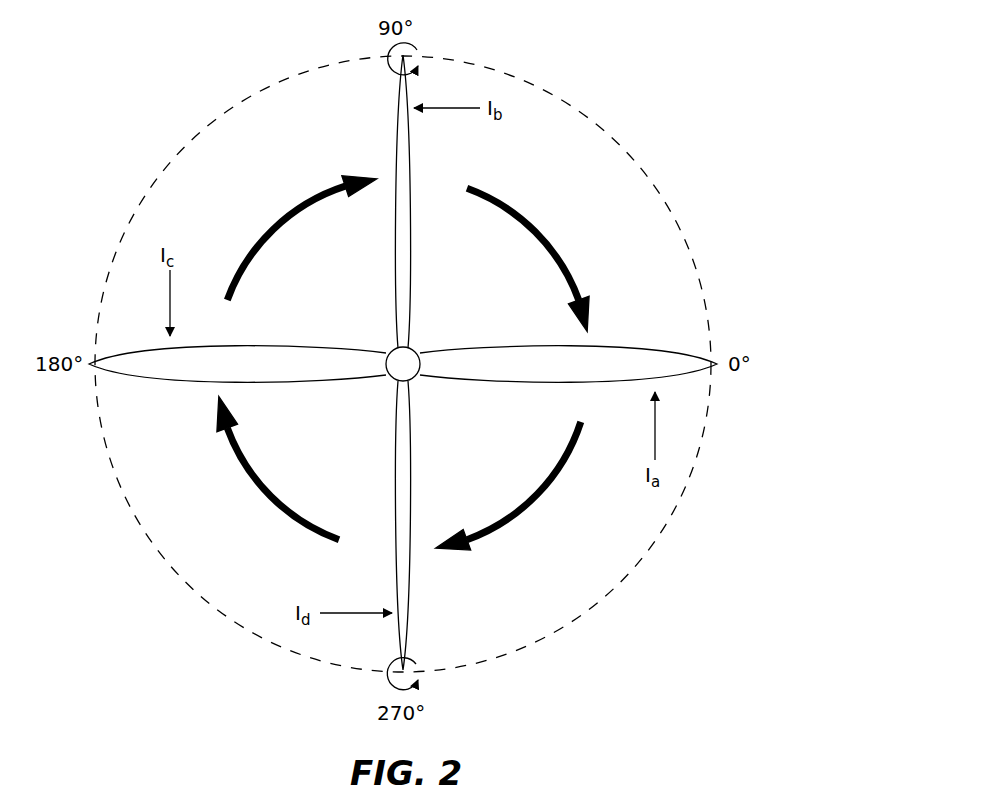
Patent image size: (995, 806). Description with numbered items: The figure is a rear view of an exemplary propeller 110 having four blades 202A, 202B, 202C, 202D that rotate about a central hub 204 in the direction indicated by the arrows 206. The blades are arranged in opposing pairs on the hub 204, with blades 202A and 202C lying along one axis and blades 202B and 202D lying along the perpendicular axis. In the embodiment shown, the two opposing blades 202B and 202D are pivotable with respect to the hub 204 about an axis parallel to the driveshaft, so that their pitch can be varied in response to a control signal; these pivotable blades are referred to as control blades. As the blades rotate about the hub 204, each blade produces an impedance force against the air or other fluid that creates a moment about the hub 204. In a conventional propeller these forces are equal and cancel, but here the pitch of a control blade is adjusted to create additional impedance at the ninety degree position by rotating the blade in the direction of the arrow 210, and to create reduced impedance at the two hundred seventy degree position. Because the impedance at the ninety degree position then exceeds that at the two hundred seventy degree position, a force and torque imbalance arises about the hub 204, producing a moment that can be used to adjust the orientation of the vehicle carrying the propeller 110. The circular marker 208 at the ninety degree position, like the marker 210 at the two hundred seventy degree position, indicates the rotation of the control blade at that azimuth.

The propeller 110 is at (678, 82).
The blade 202A is at (640, 347).
The blade 202B is at (410, 182).
The blade 202C is at (286, 347).
The blade 202D is at (410, 585).
The central hub 204 is at (418, 350).
The arrows 206 is at (282, 220).
The 90 degree azimuth position 208 is at (422, 52).
The arrow 210 is at (422, 680).